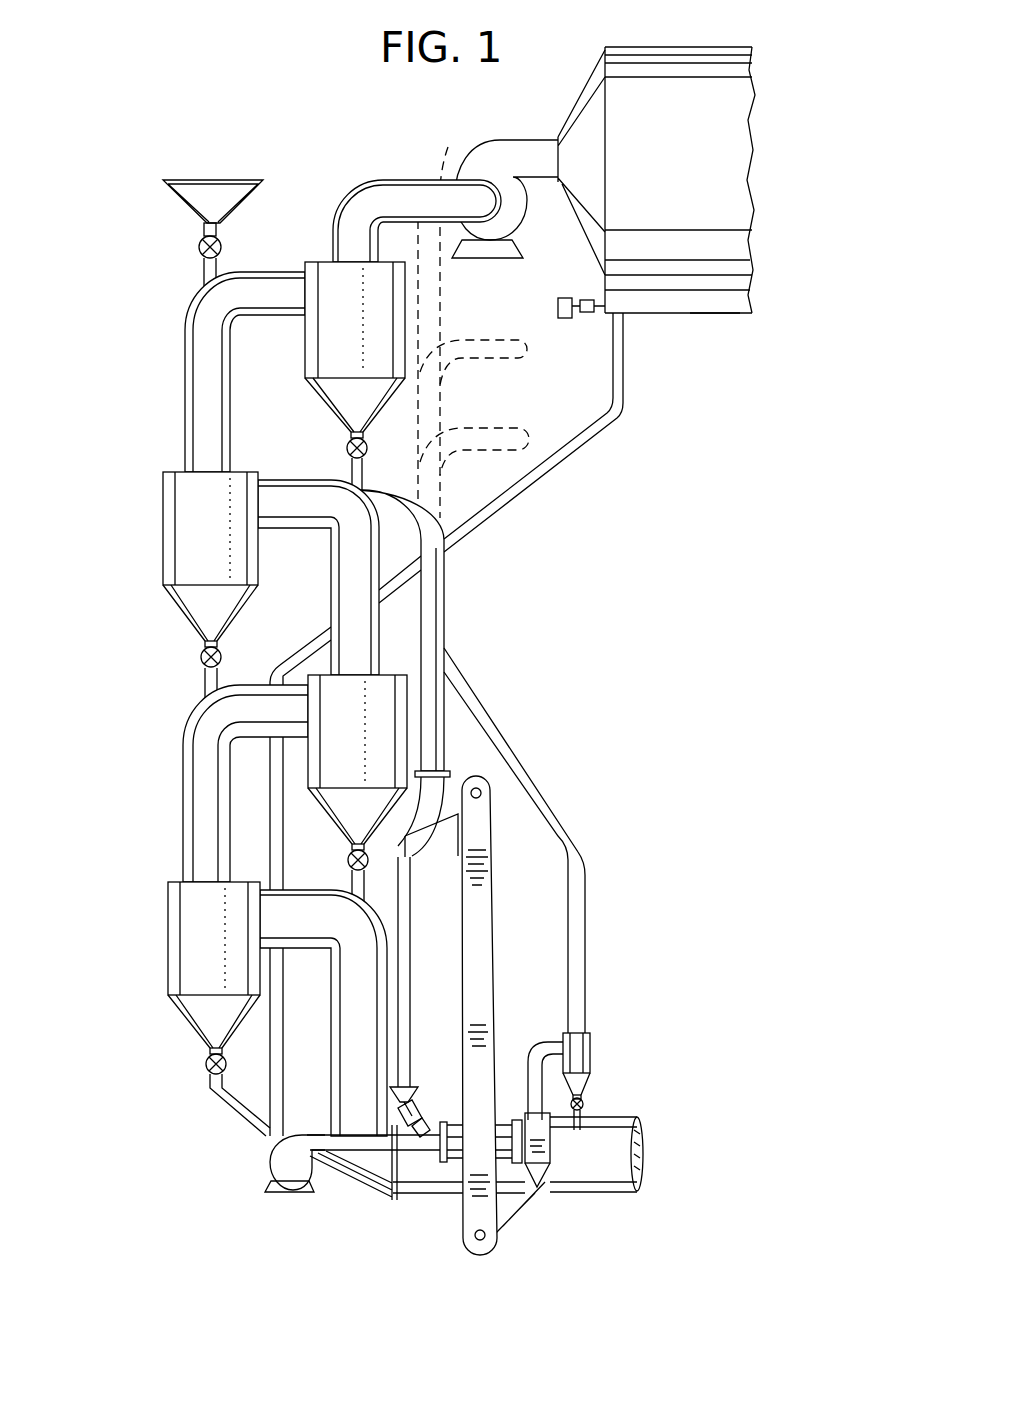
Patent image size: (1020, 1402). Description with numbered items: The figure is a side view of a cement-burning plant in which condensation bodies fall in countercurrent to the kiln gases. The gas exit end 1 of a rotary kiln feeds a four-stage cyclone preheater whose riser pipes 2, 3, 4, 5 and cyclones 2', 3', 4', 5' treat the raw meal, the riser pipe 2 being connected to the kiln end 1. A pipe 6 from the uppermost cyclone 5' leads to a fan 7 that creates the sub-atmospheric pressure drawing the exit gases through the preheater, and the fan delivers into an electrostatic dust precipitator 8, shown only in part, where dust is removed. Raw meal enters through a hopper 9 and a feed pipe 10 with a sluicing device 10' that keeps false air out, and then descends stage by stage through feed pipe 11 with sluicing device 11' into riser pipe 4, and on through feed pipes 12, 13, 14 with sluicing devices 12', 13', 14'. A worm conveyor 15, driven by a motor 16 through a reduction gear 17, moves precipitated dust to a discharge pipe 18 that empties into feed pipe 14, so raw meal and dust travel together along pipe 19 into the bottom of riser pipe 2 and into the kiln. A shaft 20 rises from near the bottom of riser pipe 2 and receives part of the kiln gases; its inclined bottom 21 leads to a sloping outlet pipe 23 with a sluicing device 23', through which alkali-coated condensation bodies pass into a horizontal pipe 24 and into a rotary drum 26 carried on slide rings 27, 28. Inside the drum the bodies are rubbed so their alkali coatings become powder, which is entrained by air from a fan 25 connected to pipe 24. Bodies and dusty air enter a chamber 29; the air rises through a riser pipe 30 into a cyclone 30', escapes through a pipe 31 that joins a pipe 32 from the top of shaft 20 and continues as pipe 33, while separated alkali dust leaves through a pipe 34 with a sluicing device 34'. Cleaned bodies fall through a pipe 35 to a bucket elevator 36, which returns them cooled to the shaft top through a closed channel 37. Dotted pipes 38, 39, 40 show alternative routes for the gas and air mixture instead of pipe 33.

The gas exit end of rotary kiln 1 is at (628, 1180).
The riser pipe 2 is at (323, 1013).
The cyclone 2' is at (184, 965).
The riser pipe 3 is at (219, 783).
The cyclone 3' is at (345, 759).
The riser pipe 4 is at (318, 577).
The cyclone 4' is at (187, 556).
The riser pipe 5 is at (217, 372).
The cyclone 5' is at (330, 347).
The pipe 6 is at (387, 181).
The fan 7 is at (520, 200).
The electrostatic dust precipitator 8 is at (735, 165).
The hopper 9 is at (190, 198).
The feed pipe 10 is at (181, 275).
The sluicing device 10' is at (183, 243).
The feed pipe 11 is at (380, 476).
The sluicing device 11' is at (333, 441).
The feed pipe 12 is at (181, 686).
The sluicing device 12' is at (182, 654).
The feed pipe 13 is at (334, 882).
The sluicing device 13' is at (335, 851).
The feed pipe 14 is at (233, 1105).
The sluicing device 14' is at (190, 1061).
The worm conveyor 15 is at (710, 304).
The motor 16 is at (563, 318).
The reduction gear 17 is at (587, 300).
The discharge pipe 18 is at (537, 485).
The pipe 19 is at (288, 1130).
The shaft 20 is at (407, 972).
The bottom of shaft 21 is at (410, 1086).
The sloping outlet pipe 23 is at (425, 1093).
The sluicing device 23' is at (437, 1112).
The horizontal pipe 24 is at (348, 1134).
The fan 25 is at (270, 1161).
The rotary drum 26 is at (481, 1140).
The slide ring 27 is at (440, 1164).
The slide ring 28 is at (517, 1119).
The chamber 29 is at (552, 1139).
The riser pipe 30 is at (538, 1061).
The cyclone 30' is at (604, 1064).
The pipe 31 is at (586, 918).
The pipe 32 is at (436, 752).
The pipe 33 is at (446, 630).
The pipe 34 is at (622, 1109).
The sluicing device 34' is at (605, 1093).
The pipe 35 is at (527, 1200).
The bucket elevator 36 is at (492, 956).
The closed channel 37 is at (416, 840).
The pipe 38 is at (473, 428).
The pipe 39 is at (468, 338).
The pipe 40 is at (452, 152).